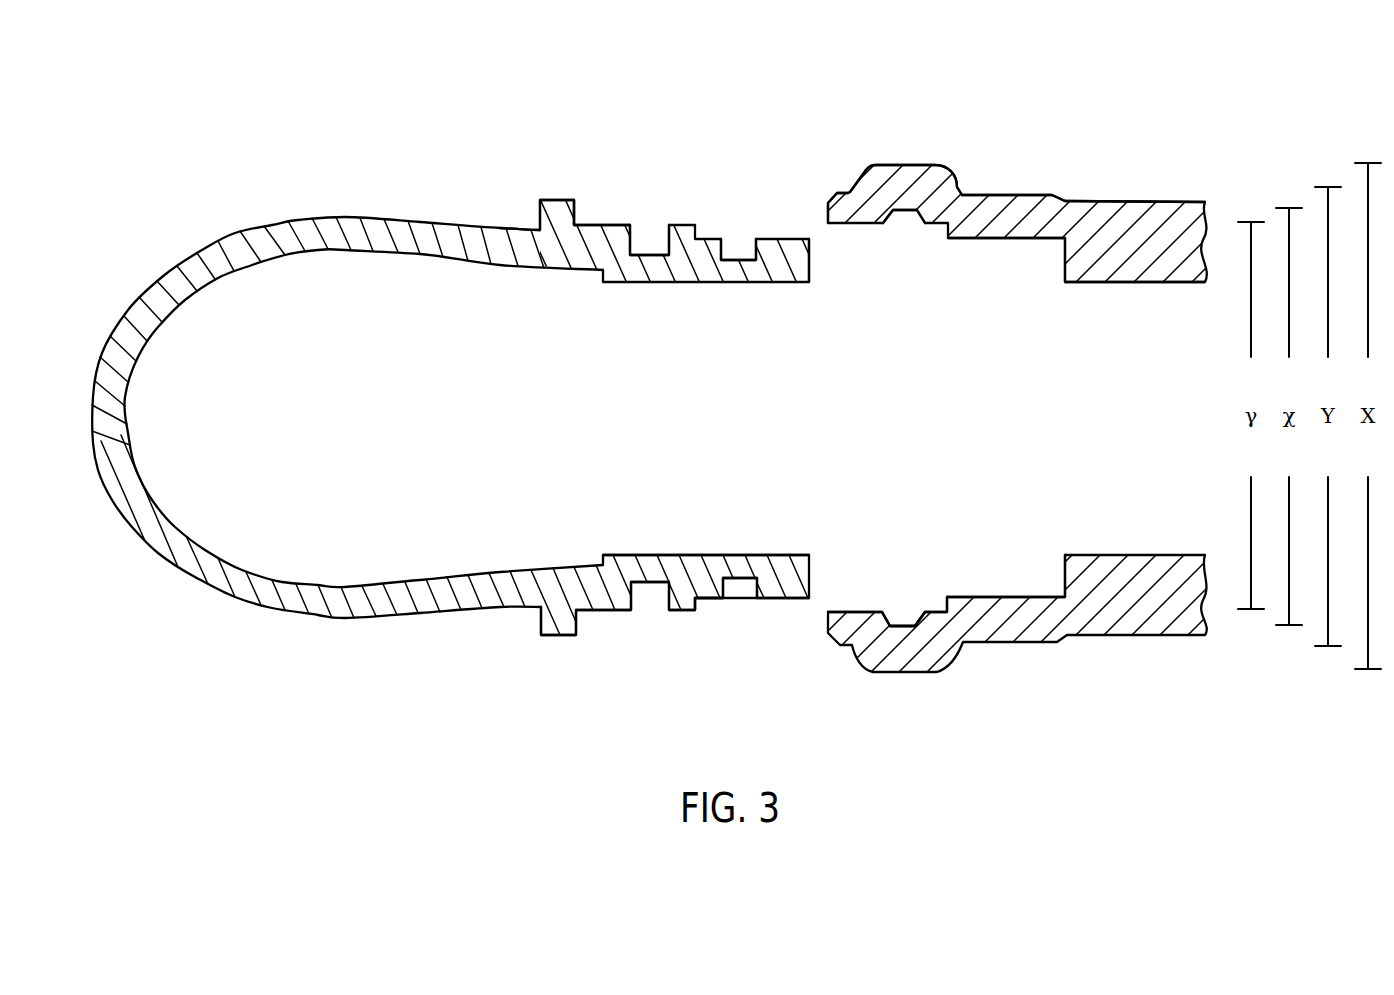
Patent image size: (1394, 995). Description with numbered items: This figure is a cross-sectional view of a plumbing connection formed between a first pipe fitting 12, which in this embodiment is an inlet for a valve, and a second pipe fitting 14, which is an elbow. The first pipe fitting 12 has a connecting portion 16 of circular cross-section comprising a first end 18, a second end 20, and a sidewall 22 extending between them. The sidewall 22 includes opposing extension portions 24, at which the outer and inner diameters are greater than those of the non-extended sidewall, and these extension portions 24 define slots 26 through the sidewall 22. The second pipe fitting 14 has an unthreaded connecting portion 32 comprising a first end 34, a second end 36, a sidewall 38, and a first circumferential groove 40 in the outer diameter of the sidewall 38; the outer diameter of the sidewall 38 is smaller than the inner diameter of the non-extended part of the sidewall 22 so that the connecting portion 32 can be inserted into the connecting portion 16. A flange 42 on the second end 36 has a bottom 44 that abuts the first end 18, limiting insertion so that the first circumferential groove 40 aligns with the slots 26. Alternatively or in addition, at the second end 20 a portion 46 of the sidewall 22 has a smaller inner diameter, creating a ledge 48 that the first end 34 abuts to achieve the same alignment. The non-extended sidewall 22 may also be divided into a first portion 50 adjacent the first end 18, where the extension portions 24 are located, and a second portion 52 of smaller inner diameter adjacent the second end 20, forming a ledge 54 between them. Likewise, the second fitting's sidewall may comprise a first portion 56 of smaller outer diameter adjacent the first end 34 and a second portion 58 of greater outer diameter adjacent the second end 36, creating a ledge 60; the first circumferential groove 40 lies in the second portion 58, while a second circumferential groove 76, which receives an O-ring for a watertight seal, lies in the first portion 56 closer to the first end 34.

The first pipe fitting 12 is at (1078, 172).
The second pipe fitting 14 is at (283, 145).
The connecting portion 16 is at (1067, 701).
The first end 18 is at (828, 215).
The second end 20 is at (1085, 276).
The sidewall 22 is at (983, 193).
The extension portions 24 is at (922, 165).
The slots 26 is at (903, 218).
The connecting portion 32 is at (810, 696).
The first end 34 is at (810, 266).
The second end 36 is at (532, 222).
The sidewall 38 is at (700, 556).
The first circumferential groove 40 is at (655, 237).
The flange 42 is at (555, 208).
The bottom 44 is at (577, 210).
The portion 46 is at (1140, 220).
The ledge 48 is at (1062, 267).
The first portion 50 is at (832, 544).
The second portion 52 is at (953, 544).
The ledge 54 is at (947, 606).
The first portion 56 is at (693, 646).
The second portion 58 is at (693, 646).
The ledge 60 is at (697, 609).
The second circumferential groove 76 is at (738, 240).